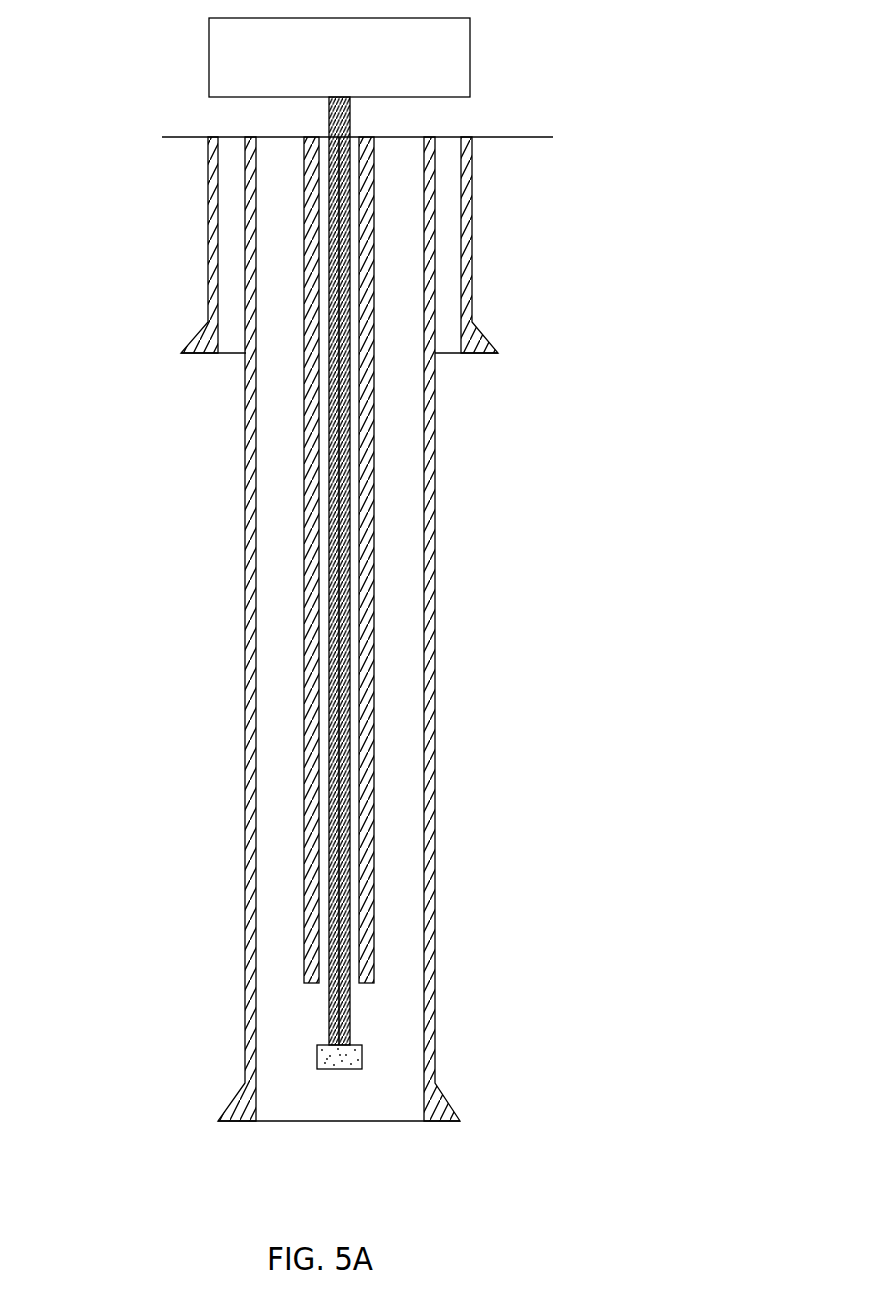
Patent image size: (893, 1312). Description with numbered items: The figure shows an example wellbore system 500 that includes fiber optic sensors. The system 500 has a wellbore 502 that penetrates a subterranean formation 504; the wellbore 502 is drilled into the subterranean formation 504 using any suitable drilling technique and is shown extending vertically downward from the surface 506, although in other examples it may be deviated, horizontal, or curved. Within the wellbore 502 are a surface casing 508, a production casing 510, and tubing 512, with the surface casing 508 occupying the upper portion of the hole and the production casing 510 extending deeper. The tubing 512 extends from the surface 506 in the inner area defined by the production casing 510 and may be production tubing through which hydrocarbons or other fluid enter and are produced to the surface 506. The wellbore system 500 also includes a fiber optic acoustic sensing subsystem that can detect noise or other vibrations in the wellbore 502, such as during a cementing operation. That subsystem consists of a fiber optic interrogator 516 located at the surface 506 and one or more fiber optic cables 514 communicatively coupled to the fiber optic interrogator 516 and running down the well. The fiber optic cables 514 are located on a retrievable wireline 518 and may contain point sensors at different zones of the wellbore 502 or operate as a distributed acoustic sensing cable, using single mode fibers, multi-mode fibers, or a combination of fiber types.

The wellbore system 500 is at (100, 90).
The wellbore 502 is at (433, 1063).
The subterranean formation 504 is at (172, 571).
The surface 506 is at (553, 137).
The surface casing 508 is at (472, 222).
The production casing 510 is at (434, 431).
The tubing 512 is at (368, 873).
The fiber optic cable 514 is at (343, 690).
The fiber optic interrogator 516 is at (470, 28).
The retrievable wireline 518 is at (350, 510).